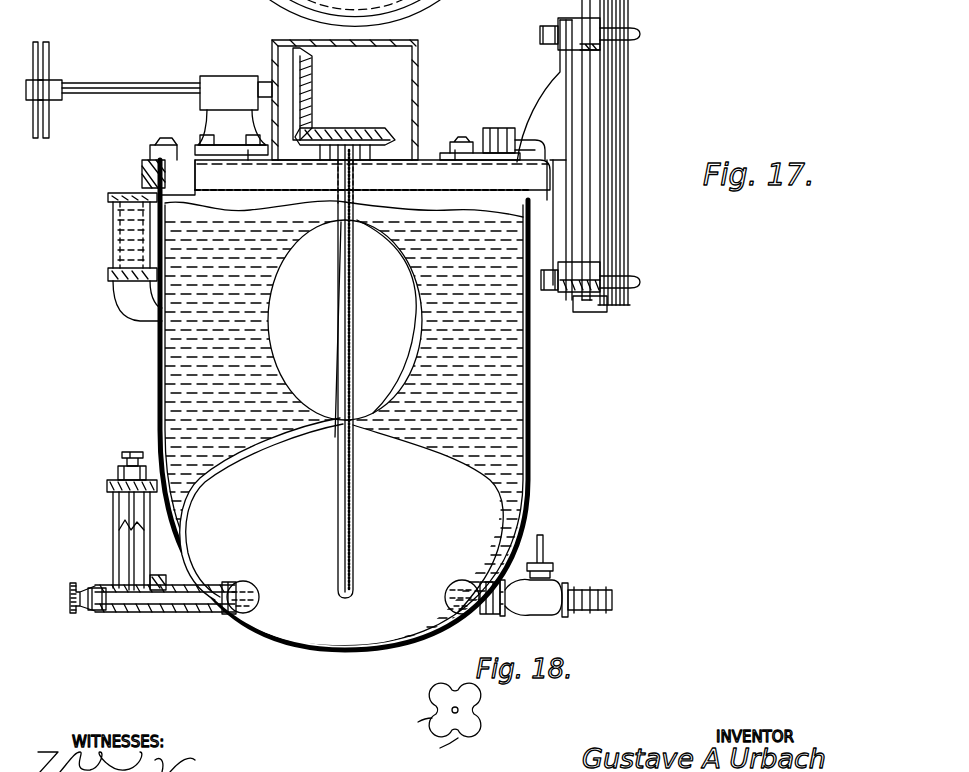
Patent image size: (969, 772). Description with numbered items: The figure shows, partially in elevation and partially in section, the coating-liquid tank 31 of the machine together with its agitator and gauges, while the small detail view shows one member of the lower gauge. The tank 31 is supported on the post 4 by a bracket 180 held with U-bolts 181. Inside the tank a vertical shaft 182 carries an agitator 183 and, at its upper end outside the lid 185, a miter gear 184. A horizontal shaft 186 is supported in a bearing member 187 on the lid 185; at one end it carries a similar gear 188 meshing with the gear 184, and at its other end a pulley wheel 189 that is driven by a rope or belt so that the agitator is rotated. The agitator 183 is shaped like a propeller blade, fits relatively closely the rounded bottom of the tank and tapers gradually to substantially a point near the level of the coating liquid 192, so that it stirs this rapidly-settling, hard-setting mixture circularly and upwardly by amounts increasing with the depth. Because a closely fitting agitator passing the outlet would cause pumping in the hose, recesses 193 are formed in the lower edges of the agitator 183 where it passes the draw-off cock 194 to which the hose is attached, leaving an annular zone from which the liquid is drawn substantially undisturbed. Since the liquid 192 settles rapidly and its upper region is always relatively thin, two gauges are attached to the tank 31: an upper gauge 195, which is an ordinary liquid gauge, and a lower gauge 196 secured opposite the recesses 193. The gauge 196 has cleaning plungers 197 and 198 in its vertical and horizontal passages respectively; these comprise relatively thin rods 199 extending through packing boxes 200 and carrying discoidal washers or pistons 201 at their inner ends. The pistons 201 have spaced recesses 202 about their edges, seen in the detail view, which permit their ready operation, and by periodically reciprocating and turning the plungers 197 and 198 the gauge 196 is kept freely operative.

In FIG. 17, the post 4 is at (626, 146).
In FIG. 17, the tank 31 is at (527, 392).
In FIG. 17, the bracket 180 is at (562, 80).
In FIG. 17, the U-bolts 181 is at (638, 42).
In FIG. 17, the vertical shaft 182 is at (337, 466).
In FIG. 17, the agitator 183 is at (280, 368).
In FIG. 17, the miter gear 184 is at (350, 130).
In FIG. 17, the lid 185 is at (425, 160).
In FIG. 17, the horizontal shaft 186 is at (148, 82).
In FIG. 17, the bearing member 187 is at (220, 80).
In FIG. 17, the gear 188 is at (313, 90).
In FIG. 17, the pulley wheel 189 is at (52, 68).
In FIG. 17, the coating liquid 192 is at (162, 352).
In FIG. 17, the recesses 193 is at (250, 590).
In FIG. 17, the draw-off cock 194 is at (553, 582).
In FIG. 17, the upper gauge 195 is at (113, 262).
In FIG. 17, the lower gauge 196 is at (113, 506).
In FIG. 17, the cleaning plunger 197 is at (131, 452).
In FIG. 17, the cleaning plunger 198 is at (70, 600).
In FIG. 17, the rods 199 is at (128, 542).
In FIG. 17, the packing boxes 200 is at (125, 478).
In FIG. 17, the pistons 201 is at (155, 588).
In FIG. 18, the pistons 201 is at (433, 693).
In FIG. 18, the recesses 202 is at (445, 730).